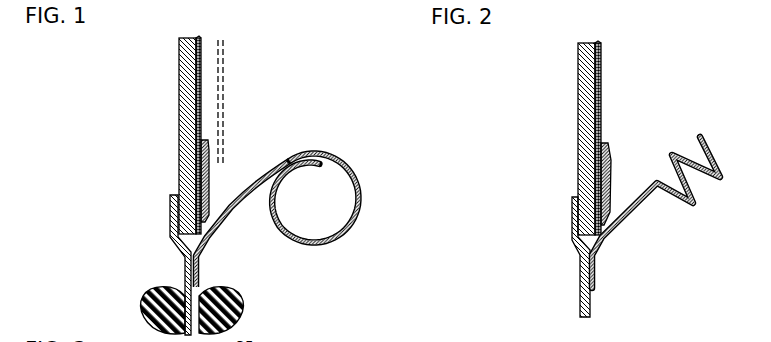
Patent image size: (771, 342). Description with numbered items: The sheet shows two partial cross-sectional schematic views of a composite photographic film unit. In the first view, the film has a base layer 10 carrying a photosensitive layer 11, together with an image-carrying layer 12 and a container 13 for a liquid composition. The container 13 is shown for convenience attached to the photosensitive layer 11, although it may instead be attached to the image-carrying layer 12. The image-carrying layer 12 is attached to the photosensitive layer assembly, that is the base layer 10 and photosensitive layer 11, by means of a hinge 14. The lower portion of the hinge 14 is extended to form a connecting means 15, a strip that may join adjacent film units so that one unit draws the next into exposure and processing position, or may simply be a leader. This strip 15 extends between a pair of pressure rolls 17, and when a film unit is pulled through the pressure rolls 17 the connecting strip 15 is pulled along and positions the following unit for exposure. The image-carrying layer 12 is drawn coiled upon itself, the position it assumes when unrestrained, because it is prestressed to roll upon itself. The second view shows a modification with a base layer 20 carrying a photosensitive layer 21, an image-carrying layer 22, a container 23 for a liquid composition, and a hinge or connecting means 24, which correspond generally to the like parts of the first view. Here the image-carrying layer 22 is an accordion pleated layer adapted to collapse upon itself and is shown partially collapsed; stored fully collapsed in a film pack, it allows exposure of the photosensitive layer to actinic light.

In FIG. 1, the base layer 10 is at (185, 120).
In FIG. 1, the photosensitive layer 11 is at (198, 68).
In FIG. 1, the image-carrying layer 12 is at (358, 197).
In FIG. 1, the container 13 is at (205, 142).
In FIG. 1, the hinge 14 is at (211, 245).
In FIG. 1, the connecting means 15 is at (178, 244).
In FIG. 1, the pressure rolls 17 is at (141, 306).
In FIG. 2, the base layer 20 is at (581, 92).
In FIG. 2, the photosensitive layer 21 is at (598, 86).
In FIG. 2, the image-carrying layer 22 is at (674, 153).
In FIG. 2, the container 23 is at (605, 148).
In FIG. 2, the hinge or connecting means 24 is at (608, 240).